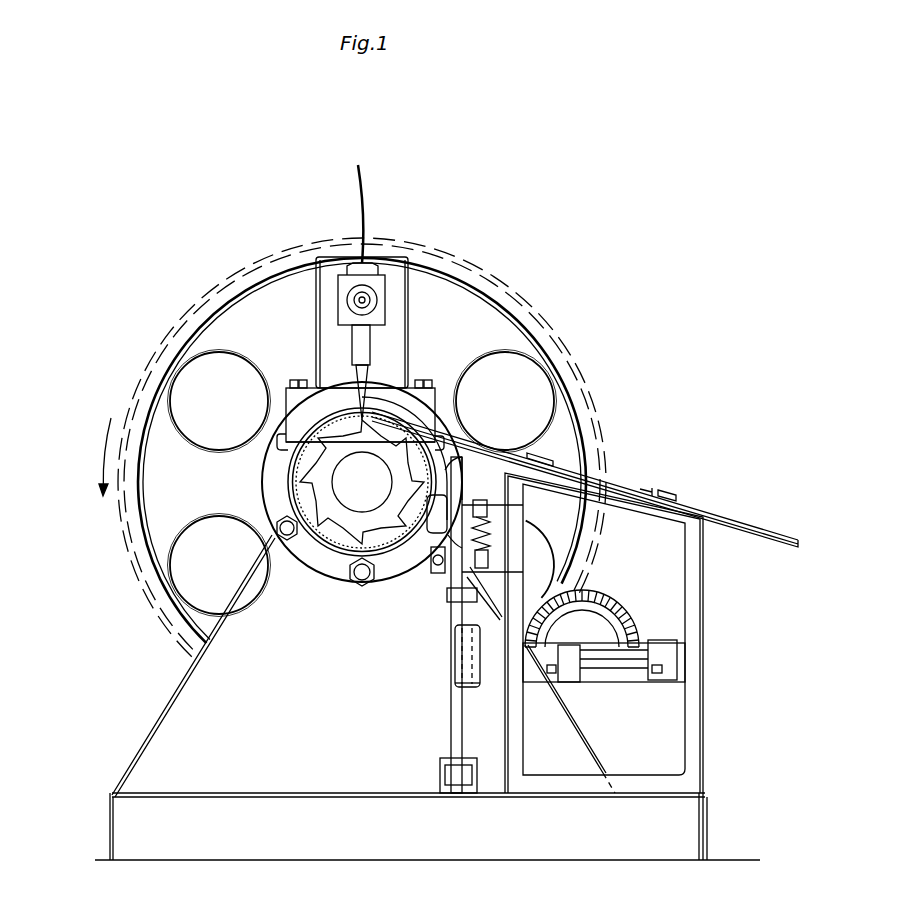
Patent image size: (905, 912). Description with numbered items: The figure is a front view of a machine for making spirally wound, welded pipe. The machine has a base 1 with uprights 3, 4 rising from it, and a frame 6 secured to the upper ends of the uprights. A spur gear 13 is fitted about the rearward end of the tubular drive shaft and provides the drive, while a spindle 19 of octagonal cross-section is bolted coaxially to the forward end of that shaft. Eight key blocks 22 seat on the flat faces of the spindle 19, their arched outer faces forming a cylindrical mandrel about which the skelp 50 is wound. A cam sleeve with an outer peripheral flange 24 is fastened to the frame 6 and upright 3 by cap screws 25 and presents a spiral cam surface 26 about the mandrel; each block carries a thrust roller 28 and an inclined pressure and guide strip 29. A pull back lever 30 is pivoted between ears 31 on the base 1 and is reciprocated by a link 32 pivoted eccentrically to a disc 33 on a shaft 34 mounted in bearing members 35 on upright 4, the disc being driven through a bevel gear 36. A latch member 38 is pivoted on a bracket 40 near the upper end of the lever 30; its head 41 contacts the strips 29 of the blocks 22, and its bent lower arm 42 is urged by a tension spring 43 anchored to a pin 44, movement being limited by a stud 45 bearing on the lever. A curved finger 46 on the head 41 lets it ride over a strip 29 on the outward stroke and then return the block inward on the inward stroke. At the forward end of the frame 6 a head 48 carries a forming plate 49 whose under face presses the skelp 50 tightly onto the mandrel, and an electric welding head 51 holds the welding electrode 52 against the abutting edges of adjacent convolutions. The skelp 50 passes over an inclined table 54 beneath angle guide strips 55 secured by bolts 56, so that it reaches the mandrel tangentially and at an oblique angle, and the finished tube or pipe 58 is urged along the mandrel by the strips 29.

The base 1 is at (700, 820).
The upright 3 is at (188, 705).
The upright 4 is at (680, 714).
The frame 6 is at (398, 262).
The spur gear 13 is at (482, 313).
The spindle 19 is at (350, 535).
The key blocks 22 is at (322, 540).
The outer peripheral flange 24 is at (324, 570).
The cap screws 25 is at (281, 438).
The cam surface 26 is at (290, 498).
The thrust roller 28 is at (364, 588).
The pressure and guide strip 29 is at (290, 470).
The pull back lever 30 is at (452, 718).
The ears 31 is at (447, 778).
The link 32 is at (466, 648).
The disc 33 is at (466, 685).
The shaft 34 is at (602, 655).
The bearing members 35 is at (660, 675).
The bevel gear 36 is at (585, 622).
The latch member 38 is at (438, 592).
The bracket 40 is at (448, 595).
The head 41 is at (466, 450).
The lower arm 42 is at (490, 572).
The tension spring 43 is at (492, 532).
The pin 44 is at (490, 506).
The stud 45 is at (442, 510).
The finger 46 is at (433, 560).
The head 48 is at (400, 345).
The forming plate 49 is at (433, 410).
The skelp 50 is at (740, 533).
The electric welding head 51 is at (358, 338).
The welding electrode 52 is at (358, 413).
The table 54 is at (700, 583).
The angle guide strips 55 is at (650, 488).
The bolts 56 is at (548, 458).
The tube or pipe 58 is at (294, 486).